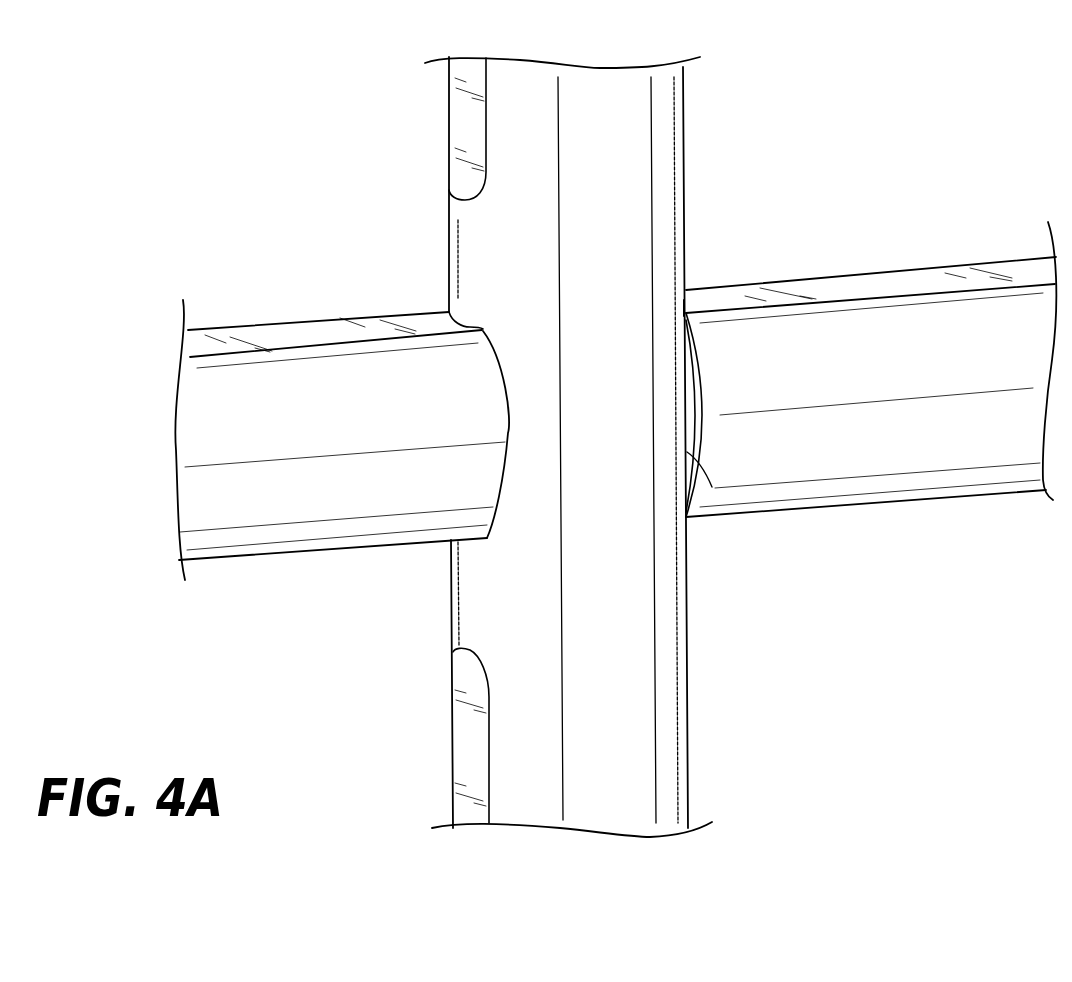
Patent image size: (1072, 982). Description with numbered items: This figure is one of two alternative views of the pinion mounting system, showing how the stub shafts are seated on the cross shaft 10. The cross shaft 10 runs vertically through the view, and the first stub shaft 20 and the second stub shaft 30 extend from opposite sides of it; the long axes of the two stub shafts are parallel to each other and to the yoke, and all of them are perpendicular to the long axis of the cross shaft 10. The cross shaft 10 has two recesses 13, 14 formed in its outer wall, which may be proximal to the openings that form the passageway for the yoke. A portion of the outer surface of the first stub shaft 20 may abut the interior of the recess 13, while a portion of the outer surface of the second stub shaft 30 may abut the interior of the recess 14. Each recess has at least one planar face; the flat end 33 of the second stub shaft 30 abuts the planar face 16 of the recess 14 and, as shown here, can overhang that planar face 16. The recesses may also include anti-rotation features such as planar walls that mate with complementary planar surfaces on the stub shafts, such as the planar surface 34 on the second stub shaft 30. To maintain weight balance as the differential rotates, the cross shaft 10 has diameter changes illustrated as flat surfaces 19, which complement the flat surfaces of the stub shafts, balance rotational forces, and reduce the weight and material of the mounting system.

The cross shaft 10 is at (558, 100).
The recess 13 is at (470, 322).
The recess 14 is at (687, 304).
The planar face 16 is at (686, 313).
The flat surfaces 19 is at (470, 115).
The first stub shaft 20 is at (412, 482).
The second stub shaft 30 is at (871, 385).
The flat end 33 is at (694, 395).
The planar surface 34 is at (739, 300).